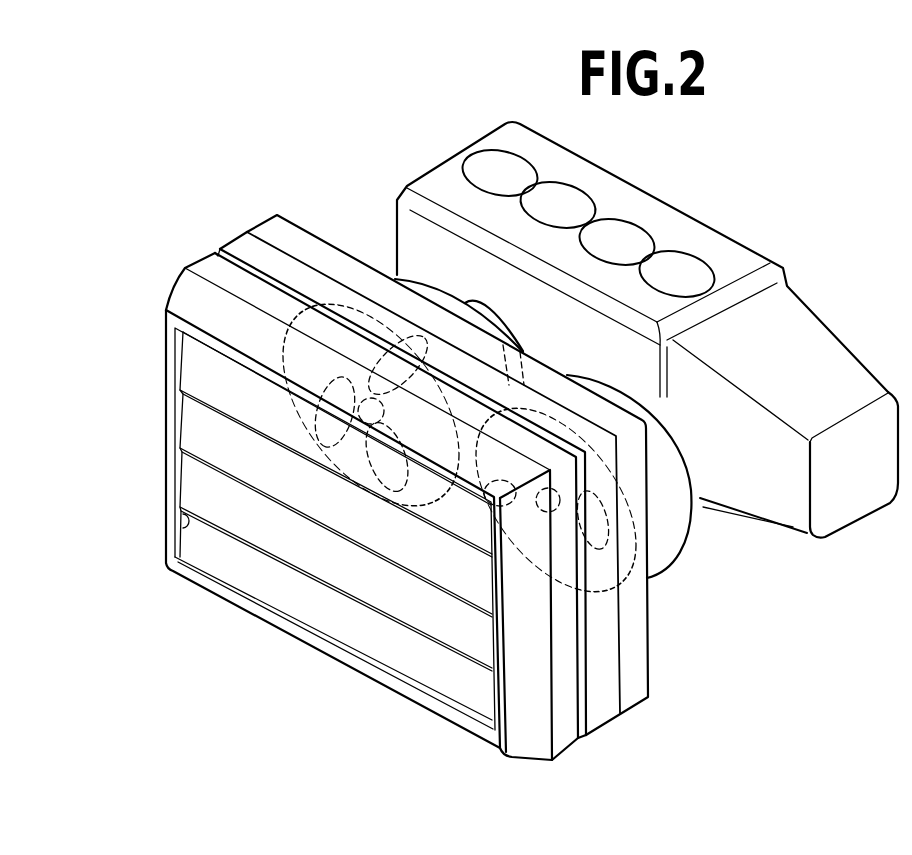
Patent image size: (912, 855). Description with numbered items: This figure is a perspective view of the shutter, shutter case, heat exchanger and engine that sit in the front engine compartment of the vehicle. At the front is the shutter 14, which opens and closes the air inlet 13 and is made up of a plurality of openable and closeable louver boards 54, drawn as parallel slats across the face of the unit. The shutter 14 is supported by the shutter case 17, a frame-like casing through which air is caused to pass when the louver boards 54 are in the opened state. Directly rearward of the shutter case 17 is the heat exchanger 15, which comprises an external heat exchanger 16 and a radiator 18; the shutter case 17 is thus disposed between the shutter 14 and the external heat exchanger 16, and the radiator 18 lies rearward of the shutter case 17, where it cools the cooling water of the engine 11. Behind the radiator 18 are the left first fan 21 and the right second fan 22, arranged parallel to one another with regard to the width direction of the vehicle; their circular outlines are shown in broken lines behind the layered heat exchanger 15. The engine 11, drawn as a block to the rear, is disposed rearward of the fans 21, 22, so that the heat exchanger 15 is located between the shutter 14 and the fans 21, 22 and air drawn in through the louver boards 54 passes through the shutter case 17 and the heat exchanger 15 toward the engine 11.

The engine 11 is at (471, 141).
The air inlet 13 is at (185, 527).
The shutter 14 is at (218, 389).
The heat exchanger 15 is at (200, 115).
The external heat exchanger 16 is at (240, 238).
The shutter case 17 is at (206, 262).
The radiator 18 is at (273, 221).
The left first fan 21 is at (597, 520).
The right second fan 22 is at (413, 388).
The louver boards 54 is at (212, 365).